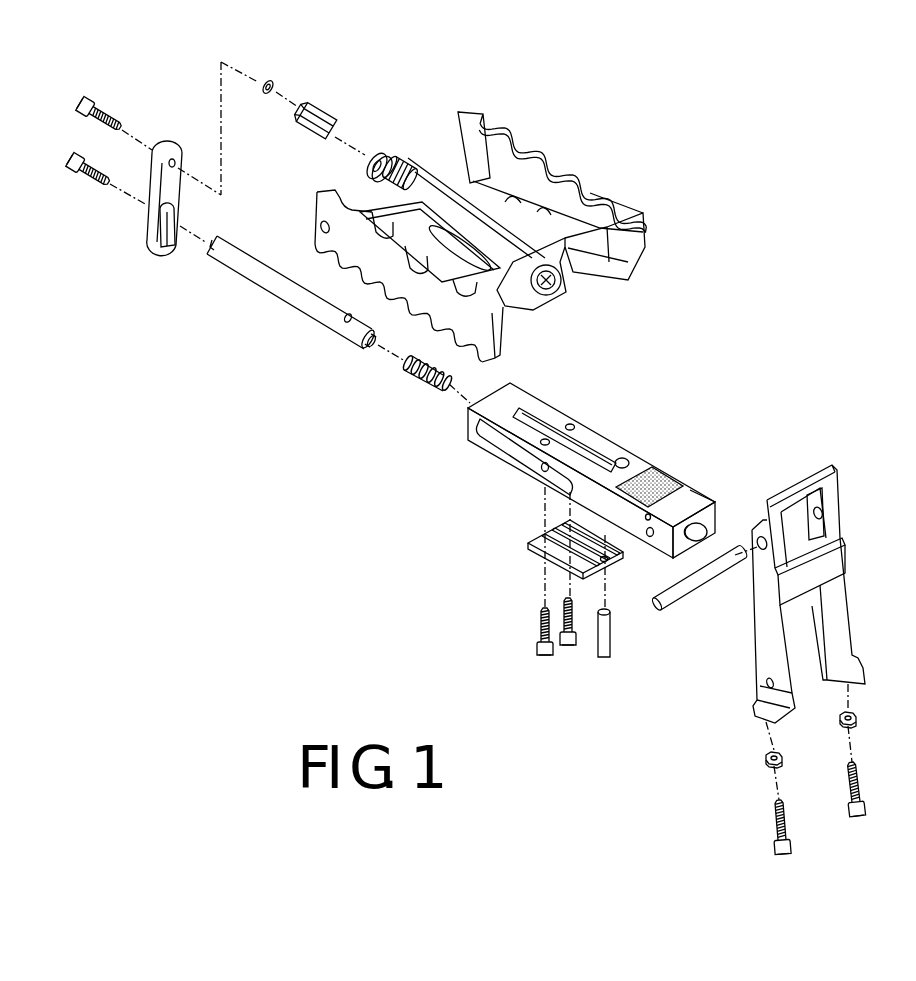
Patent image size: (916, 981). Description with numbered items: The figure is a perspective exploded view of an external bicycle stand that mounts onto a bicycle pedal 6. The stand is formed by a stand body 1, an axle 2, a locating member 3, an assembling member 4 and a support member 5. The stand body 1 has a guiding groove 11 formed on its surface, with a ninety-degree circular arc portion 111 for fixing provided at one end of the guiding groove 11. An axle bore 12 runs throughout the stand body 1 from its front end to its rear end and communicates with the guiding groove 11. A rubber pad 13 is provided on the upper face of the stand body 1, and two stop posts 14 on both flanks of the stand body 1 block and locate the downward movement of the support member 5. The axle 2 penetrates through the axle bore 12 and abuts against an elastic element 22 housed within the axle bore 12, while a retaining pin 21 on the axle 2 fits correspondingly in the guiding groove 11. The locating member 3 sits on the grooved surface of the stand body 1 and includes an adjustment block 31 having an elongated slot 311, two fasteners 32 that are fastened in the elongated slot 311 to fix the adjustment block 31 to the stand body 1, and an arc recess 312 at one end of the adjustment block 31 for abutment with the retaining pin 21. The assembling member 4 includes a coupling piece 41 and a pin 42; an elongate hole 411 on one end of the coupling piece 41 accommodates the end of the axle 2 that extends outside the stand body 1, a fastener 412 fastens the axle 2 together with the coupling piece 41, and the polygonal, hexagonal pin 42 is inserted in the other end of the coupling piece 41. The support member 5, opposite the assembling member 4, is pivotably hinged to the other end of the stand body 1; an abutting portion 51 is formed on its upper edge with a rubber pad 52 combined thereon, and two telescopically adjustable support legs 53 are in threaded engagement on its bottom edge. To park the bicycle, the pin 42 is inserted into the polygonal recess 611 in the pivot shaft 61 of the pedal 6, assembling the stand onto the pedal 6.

The stand body 1 is at (473, 442).
The guiding groove 11 is at (547, 428).
The circular arc portion 111 is at (622, 460).
The axle bore 12 is at (694, 532).
The rubber pad 13 is at (657, 468).
The stop posts 14 is at (698, 487).
The axle 2 is at (252, 273).
The retaining pin 21 is at (607, 642).
The elastic element 22 is at (420, 377).
The locating member 3 is at (481, 604).
The adjustment block 31 is at (552, 560).
The elongated slot 311 is at (543, 538).
The arc recess 312 is at (606, 563).
The fasteners 32 is at (534, 625).
The assembling member 4 is at (137, 106).
The coupling piece 41 is at (153, 208).
The elongate hole 411 is at (180, 240).
The fastener 412 is at (84, 182).
The pin 42 is at (305, 134).
The support member 5 is at (854, 596).
The abutting portion 51 is at (823, 462).
The rubber pad 52 is at (758, 491).
The support legs 53 is at (770, 806).
The bicycle pedal 6 is at (565, 190).
The pivot shaft 61 is at (398, 160).
The polygonal recess 611 is at (380, 150).